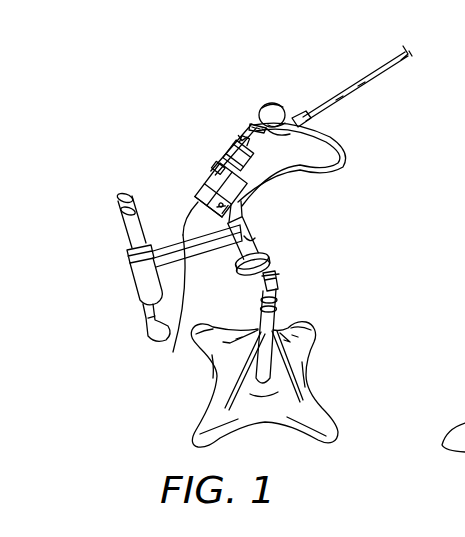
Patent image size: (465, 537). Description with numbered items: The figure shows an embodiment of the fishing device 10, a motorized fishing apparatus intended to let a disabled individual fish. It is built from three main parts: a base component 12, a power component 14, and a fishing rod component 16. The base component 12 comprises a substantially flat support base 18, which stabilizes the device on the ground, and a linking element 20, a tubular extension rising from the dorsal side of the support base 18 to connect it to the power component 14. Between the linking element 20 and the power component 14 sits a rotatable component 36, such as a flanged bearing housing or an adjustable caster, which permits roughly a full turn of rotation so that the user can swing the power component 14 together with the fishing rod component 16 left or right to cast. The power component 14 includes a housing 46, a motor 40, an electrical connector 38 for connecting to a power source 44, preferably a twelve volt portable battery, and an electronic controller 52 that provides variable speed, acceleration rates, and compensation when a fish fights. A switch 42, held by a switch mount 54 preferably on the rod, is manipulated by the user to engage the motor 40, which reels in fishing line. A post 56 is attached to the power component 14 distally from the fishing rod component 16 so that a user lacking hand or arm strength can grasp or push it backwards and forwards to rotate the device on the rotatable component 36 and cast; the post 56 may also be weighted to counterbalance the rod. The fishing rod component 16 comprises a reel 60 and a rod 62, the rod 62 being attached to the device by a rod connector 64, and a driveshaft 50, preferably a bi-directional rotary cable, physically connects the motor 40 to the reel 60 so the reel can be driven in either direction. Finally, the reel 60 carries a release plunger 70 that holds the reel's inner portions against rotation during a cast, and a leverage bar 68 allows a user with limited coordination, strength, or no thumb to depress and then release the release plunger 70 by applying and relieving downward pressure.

The fishing device 10 is at (119, 402).
The base component 12 is at (283, 313).
The power component 14 is at (127, 249).
The fishing rod component 16 is at (301, 114).
The support base 18 is at (199, 425).
The linking element 20 is at (266, 278).
The rotatable component 36 is at (268, 248).
The electrical connector 38 is at (186, 231).
The motor 40 is at (194, 191).
The switch 42 is at (222, 152).
The power source 44 is at (139, 299).
The housing 46 is at (172, 354).
The driveshaft 50 is at (347, 157).
The electronic controller 52 is at (126, 259).
The switch mount 54 is at (220, 154).
The post 56 is at (116, 200).
The reel 60 is at (263, 104).
The rod 62 is at (337, 92).
The rod connector 64 is at (217, 168).
The leverage bar 68 is at (228, 155).
The release plunger 70 is at (256, 121).